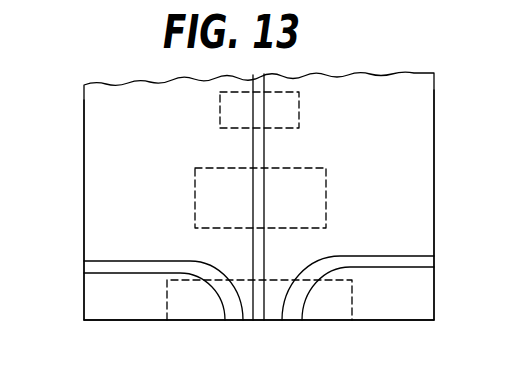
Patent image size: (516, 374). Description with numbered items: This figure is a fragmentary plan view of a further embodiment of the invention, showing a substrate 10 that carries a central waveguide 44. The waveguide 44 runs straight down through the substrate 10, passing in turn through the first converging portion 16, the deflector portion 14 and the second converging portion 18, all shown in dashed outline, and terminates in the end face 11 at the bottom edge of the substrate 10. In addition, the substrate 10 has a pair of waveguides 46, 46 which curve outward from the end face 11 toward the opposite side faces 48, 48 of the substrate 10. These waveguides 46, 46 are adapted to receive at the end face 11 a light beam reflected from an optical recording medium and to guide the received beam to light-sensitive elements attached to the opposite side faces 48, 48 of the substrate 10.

The substrate 10 is at (434, 137).
The end face 11 is at (405, 320).
The deflector portion 14 is at (302, 168).
The first converging portion 16 is at (300, 108).
The second converging portion 18 is at (353, 300).
The waveguide 44 is at (253, 150).
The waveguides 46 is at (138, 261).
The side faces 48 is at (84, 216).